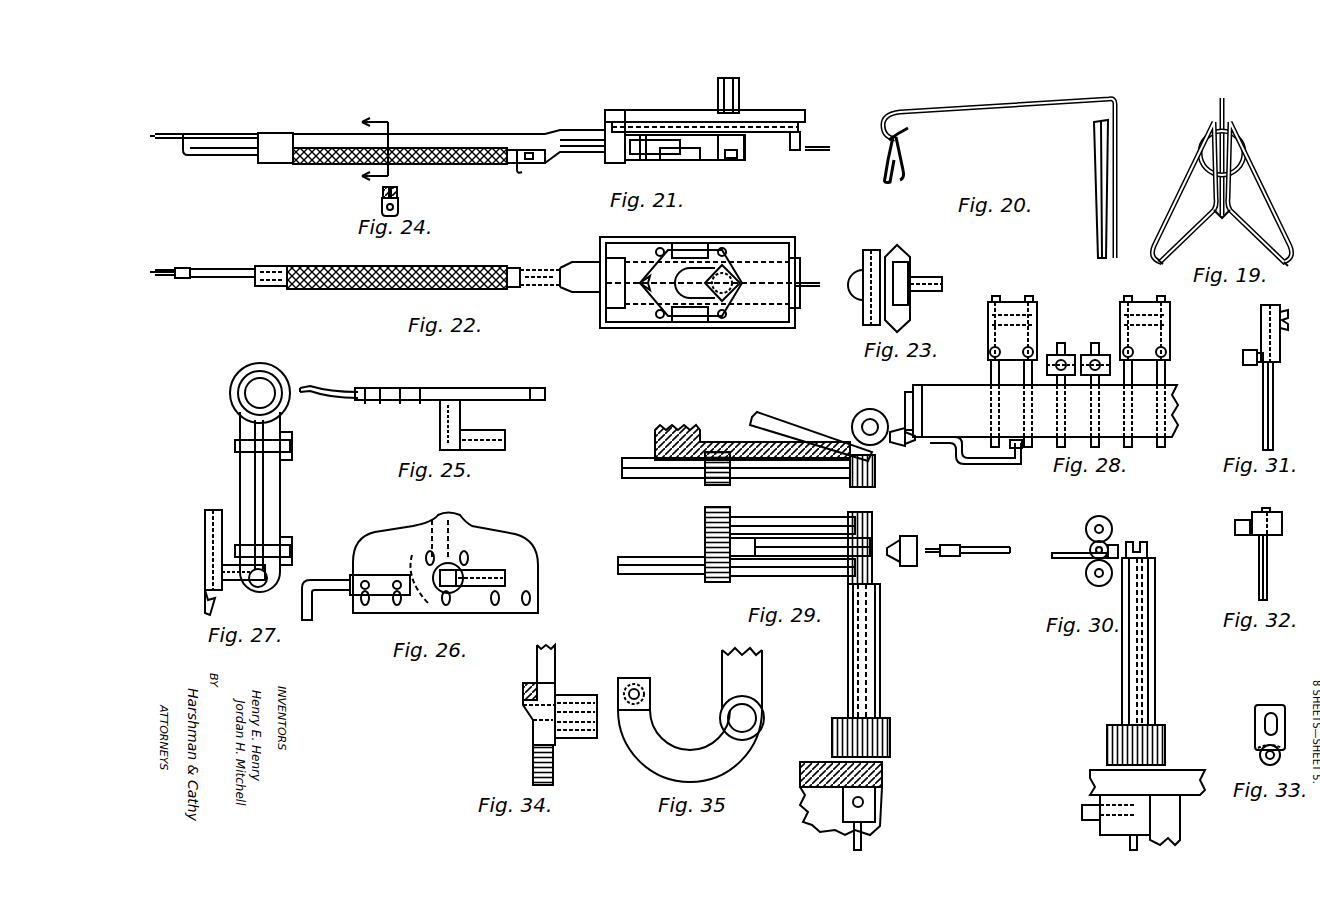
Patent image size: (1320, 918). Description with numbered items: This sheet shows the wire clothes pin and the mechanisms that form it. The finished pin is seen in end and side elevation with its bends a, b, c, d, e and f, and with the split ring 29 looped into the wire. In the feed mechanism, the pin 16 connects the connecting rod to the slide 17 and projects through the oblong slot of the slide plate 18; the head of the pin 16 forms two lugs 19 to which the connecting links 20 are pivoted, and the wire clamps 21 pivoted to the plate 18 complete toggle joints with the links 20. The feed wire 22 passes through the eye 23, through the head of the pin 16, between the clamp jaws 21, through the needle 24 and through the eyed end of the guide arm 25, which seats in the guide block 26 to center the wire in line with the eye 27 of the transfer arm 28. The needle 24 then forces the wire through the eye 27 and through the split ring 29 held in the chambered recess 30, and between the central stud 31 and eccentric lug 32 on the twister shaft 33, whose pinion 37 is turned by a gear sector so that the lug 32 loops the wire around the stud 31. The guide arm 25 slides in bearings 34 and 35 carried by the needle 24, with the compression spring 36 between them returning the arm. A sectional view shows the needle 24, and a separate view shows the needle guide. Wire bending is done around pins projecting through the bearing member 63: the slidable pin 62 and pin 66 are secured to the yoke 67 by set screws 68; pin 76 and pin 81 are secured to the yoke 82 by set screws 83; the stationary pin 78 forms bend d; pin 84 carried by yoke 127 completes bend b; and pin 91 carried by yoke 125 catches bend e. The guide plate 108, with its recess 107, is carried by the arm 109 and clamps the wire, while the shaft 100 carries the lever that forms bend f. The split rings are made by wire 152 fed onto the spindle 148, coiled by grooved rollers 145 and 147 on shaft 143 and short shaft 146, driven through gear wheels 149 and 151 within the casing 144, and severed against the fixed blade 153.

In FIG. 21, the pin 16 is at (740, 90).
In FIG. 22, the pin 16 is at (745, 290).
In FIG. 23, the pin 16 is at (935, 278).
In FIG. 21, the slide 17 is at (806, 116).
In FIG. 22, the slide 17 is at (800, 262).
In FIG. 23, the slide 17 is at (910, 298).
In FIG. 21, the slide plate 18 is at (800, 128).
In FIG. 22, the slide plate 18 is at (796, 242).
In FIG. 23, the slide plate 18 is at (903, 250).
In FIG. 21, the lugs 19 is at (738, 160).
In FIG. 22, the lugs 19 is at (735, 248).
In FIG. 23, the lugs 19 is at (875, 250).
In FIG. 21, the connecting links 20 is at (695, 160).
In FIG. 22, the connecting links 20 is at (695, 243).
In FIG. 21, the wire clamps 21 is at (655, 160).
In FIG. 22, the wire clamps 21 is at (677, 281).
In FIG. 21, the feed wire 22 is at (172, 132).
In FIG. 22, the feed wire 22 is at (168, 270).
In FIG. 28, the feed wire 22 is at (933, 411).
In FIG. 29, the feed wire 22 is at (942, 545).
In FIG. 22, the eye 23 is at (800, 280).
In FIG. 21, the needle 24 is at (542, 138).
In FIG. 24, the needle 24 is at (398, 200).
In FIG. 22, the needle 24 is at (570, 292).
In FIG. 21, the guide arm 25 is at (186, 157).
In FIG. 22, the guide arm 25 is at (232, 270).
In FIG. 28, the guide arm 25 is at (1010, 464).
In FIG. 29, the guide arm 25 is at (990, 553).
In FIG. 29, the guide block 26 is at (908, 445).
In FIG. 35, the eye 27 is at (628, 680).
In FIG. 21, the transfer arm 28 is at (795, 152).
In FIG. 34, the transfer arm 28 is at (533, 757).
In FIG. 35, the transfer arm 28 is at (640, 768).
In FIG. 20, the split ring 29 is at (905, 153).
In FIG. 19, the split ring 29 is at (1197, 157).
In FIG. 34, the chambered recess 30 is at (523, 692).
In FIG. 35, the chambered recess 30 is at (646, 694).
In FIG. 29, the central stud 31 is at (860, 420).
In FIG. 30, the central stud 31 is at (1150, 550).
In FIG. 30, the eccentric lug 32 is at (1148, 545).
In FIG. 29, the twister shaft 33 is at (876, 412).
In FIG. 30, the twister shaft 33 is at (1156, 658).
In FIG. 21, the bearing 34 is at (528, 167).
In FIG. 21, the bearing 35 is at (274, 164).
In FIG. 21, the compression spring 36 is at (330, 165).
In FIG. 22, the compression spring 36 is at (325, 289).
In FIG. 29, the pinion 37 is at (858, 412).
In FIG. 30, the pinion 37 is at (1107, 742).
In FIG. 28, the slidable pin 62 is at (1167, 442).
In FIG. 31, the slidable pin 62 is at (1263, 420).
In FIG. 28, the bearing member 63 is at (972, 385).
In FIG. 28, the pin 66 is at (1134, 447).
In FIG. 28, the yoke 67 is at (1150, 302).
In FIG. 31, the yoke 67 is at (1280, 335).
In FIG. 28, the set screws 68 is at (1184, 345).
In FIG. 31, the set screws 68 is at (1246, 350).
In FIG. 28, the pin 76 is at (1024, 454).
In FIG. 28, the stationary pin 78 is at (1067, 447).
In FIG. 28, the pin 81 is at (1032, 447).
In FIG. 28, the yoke 82 is at (1037, 322).
In FIG. 28, the set screws 83 is at (1011, 339).
In FIG. 28, the pin 84 is at (1105, 395).
In FIG. 32, the pin 84 is at (1259, 566).
In FIG. 28, the pin 91 is at (1040, 403).
In FIG. 27, the shaft 100 is at (240, 383).
In FIG. 25, the recess 107 is at (445, 384).
In FIG. 26, the recess 107 is at (442, 610).
In FIG. 27, the guide plate 108 is at (222, 535).
In FIG. 25, the guide plate 108 is at (545, 398).
In FIG. 26, the guide plate 108 is at (538, 554).
In FIG. 27, the arm 109 is at (240, 466).
In FIG. 28, the yoke 125 is at (1062, 355).
In FIG. 28, the yoke 127 is at (1102, 372).
In FIG. 32, the yoke 127 is at (1255, 514).
In FIG. 29, the shaft 143 is at (636, 458).
In FIG. 29, the casing 144 is at (722, 442).
In FIG. 29, the roller 145 is at (848, 576).
In FIG. 30, the roller 145 is at (1086, 578).
In FIG. 29, the short shaft 146 is at (795, 517).
In FIG. 29, the roller 147 is at (865, 512).
In FIG. 30, the roller 147 is at (1086, 522).
In FIG. 29, the spindle 148 is at (762, 556).
In FIG. 29, the gear wheel 149 is at (705, 512).
In FIG. 29, the gear wheel 151 is at (730, 545).
In FIG. 30, the wire 152 is at (1068, 546).
In FIG. 29, the fixed blade 153 is at (895, 542).
In FIG. 30, the fixed blade 153 is at (1112, 545).
In FIG. 19, the bend a is at (1221, 222).
In FIG. 19, the partial bend b is at (1156, 263).
In FIG. 19, the bend c is at (1232, 212).
In FIG. 20, the partial bend d is at (1093, 123).
In FIG. 19, the partial bend d is at (1235, 130).
In FIG. 19, the partial bend e is at (1286, 266).
In FIG. 20, the bend f is at (1117, 104).
In FIG. 19, the bend f is at (1228, 102).